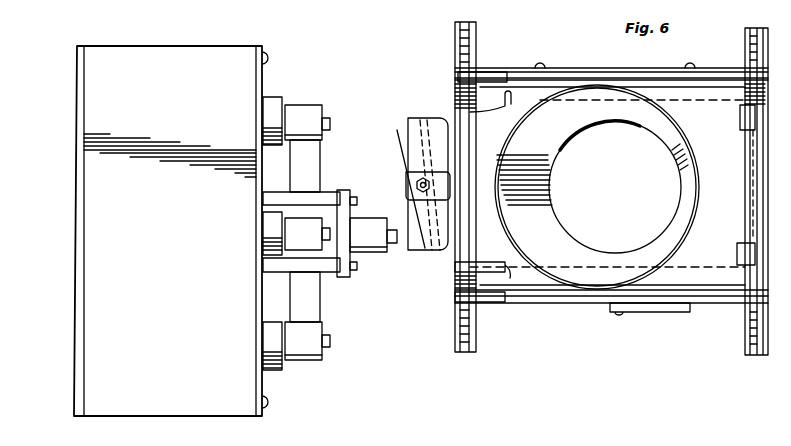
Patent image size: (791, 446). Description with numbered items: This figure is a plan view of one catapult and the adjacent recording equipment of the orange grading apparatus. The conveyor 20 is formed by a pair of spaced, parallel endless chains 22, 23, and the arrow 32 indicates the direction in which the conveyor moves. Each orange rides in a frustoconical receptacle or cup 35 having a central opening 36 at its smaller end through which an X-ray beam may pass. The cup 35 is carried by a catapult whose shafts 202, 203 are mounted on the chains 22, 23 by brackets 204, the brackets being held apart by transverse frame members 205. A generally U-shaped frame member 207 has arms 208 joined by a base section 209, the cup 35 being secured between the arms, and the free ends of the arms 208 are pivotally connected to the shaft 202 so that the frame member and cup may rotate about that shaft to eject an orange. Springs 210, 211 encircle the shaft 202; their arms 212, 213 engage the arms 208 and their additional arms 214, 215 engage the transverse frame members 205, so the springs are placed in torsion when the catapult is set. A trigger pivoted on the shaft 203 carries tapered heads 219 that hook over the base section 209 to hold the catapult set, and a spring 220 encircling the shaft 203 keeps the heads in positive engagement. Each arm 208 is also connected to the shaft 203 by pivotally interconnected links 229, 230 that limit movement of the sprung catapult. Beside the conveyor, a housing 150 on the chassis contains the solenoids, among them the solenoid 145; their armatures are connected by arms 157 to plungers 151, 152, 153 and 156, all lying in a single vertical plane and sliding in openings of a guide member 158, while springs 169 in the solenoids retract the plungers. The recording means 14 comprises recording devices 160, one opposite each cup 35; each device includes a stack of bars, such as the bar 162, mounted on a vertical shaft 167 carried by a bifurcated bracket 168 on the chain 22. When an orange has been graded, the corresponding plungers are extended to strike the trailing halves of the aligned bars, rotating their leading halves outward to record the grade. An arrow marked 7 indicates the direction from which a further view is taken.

The section line 7 is at (286, 12).
The recording means 14 is at (100, 313).
The conveyor 20 is at (607, 392).
The endless chain 22 is at (453, 355).
The endless chain 23 is at (752, 354).
The arrow 32 is at (600, 348).
The receptacle 35 is at (562, 137).
The central opening 36 is at (578, 130).
The solenoid 145 is at (178, 6).
The housing 150 is at (84, 216).
The plunger 151 is at (365, 24).
The plunger 152 is at (384, 7).
The plunger 153 is at (399, 22).
The plunger 156 is at (385, 253).
The arm 157 is at (310, 176).
The guide member 158 is at (358, 218).
The recording device 160 is at (436, 240).
The bar 162 is at (429, 4).
The vertical shaft 167 is at (418, 195).
The bifurcated bracket 168 is at (455, 168).
The spring 169 is at (140, 6).
The shaft 202 is at (465, 140).
The shaft 203 is at (745, 182).
The bracket 204 is at (452, 73).
The transverse frame member 205 is at (532, 86).
The U-shaped frame member 207 is at (592, 304).
The arm 208 is at (575, 70).
The base section 209 is at (745, 273).
The spring 210 is at (452, 91).
The spring 211 is at (452, 295).
The spring arm 212 is at (484, 73).
The spring arm 213 is at (482, 303).
The additional spring arm 214 is at (496, 100).
The additional spring arm 215 is at (482, 265).
The tapered head 219 is at (742, 128).
The spring 220 is at (745, 97).
The link 229 is at (645, 311).
The link 230 is at (672, 313).